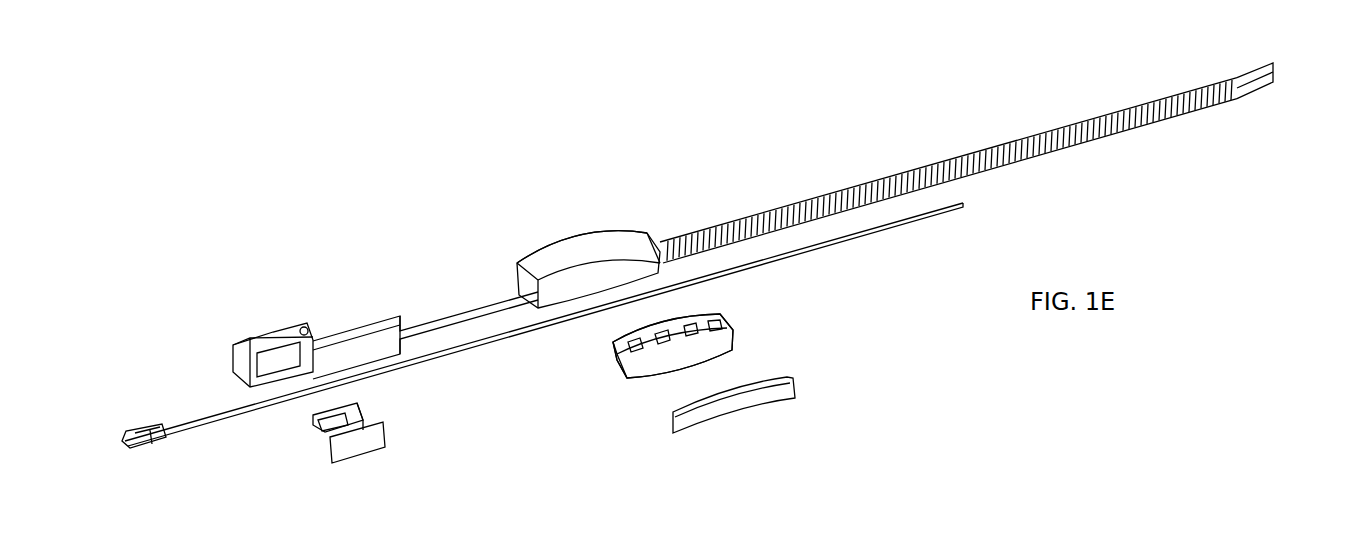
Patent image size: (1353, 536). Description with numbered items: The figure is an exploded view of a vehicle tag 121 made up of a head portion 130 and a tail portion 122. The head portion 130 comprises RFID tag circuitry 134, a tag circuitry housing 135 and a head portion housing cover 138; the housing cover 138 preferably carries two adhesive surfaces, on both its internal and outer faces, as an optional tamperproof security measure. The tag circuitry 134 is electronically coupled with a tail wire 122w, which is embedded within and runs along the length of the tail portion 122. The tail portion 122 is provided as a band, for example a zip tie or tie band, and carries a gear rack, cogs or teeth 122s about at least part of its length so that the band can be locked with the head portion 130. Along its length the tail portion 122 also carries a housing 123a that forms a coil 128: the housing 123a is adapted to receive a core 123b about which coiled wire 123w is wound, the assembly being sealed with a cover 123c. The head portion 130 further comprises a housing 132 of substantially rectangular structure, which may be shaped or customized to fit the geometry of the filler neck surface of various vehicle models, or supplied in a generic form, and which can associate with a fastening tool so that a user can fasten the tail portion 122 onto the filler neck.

The tag 121 is at (273, 188).
The tail portion 122 is at (473, 285).
The teeth 122s is at (1057, 143).
The tail wire 122w is at (203, 412).
The housing 123a is at (605, 228).
The core 123b is at (617, 355).
The cover 123c is at (728, 388).
The coiled wire 123w is at (730, 323).
The coil 128 is at (507, 152).
The head portion 130 is at (243, 305).
The housing 132 is at (277, 332).
The RFID tag circuitry 134 is at (138, 428).
The tag circuitry housing 135 is at (362, 412).
The head portion housing cover 138 is at (362, 427).